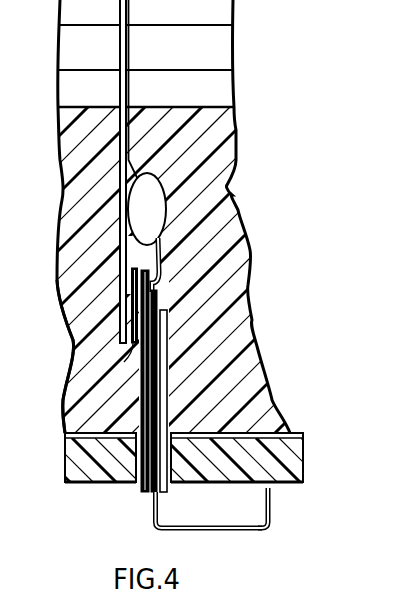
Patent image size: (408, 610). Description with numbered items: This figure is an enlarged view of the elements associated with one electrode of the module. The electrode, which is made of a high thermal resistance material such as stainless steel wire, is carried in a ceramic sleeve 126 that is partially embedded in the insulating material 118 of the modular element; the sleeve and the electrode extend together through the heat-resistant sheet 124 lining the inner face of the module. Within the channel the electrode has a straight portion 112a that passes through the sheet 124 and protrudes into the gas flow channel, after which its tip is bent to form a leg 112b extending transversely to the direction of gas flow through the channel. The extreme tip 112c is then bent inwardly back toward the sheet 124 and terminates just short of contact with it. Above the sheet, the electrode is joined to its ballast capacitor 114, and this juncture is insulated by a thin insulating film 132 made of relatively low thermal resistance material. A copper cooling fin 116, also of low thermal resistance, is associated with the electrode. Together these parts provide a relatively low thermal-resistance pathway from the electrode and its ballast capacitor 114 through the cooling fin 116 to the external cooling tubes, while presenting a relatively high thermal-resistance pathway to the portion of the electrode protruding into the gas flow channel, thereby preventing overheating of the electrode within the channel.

The straight portion 112a is at (150, 503).
The leg 112b is at (230, 533).
The extreme tip 112c is at (272, 522).
The ballast capacitor 114 is at (160, 215).
The cooling fin 116 is at (120, 338).
The insulating material 118 is at (263, 393).
The heat-resistant sheet 124 is at (298, 463).
The ceramic sleeve 126 is at (170, 340).
The insulating film 132 is at (63, 393).